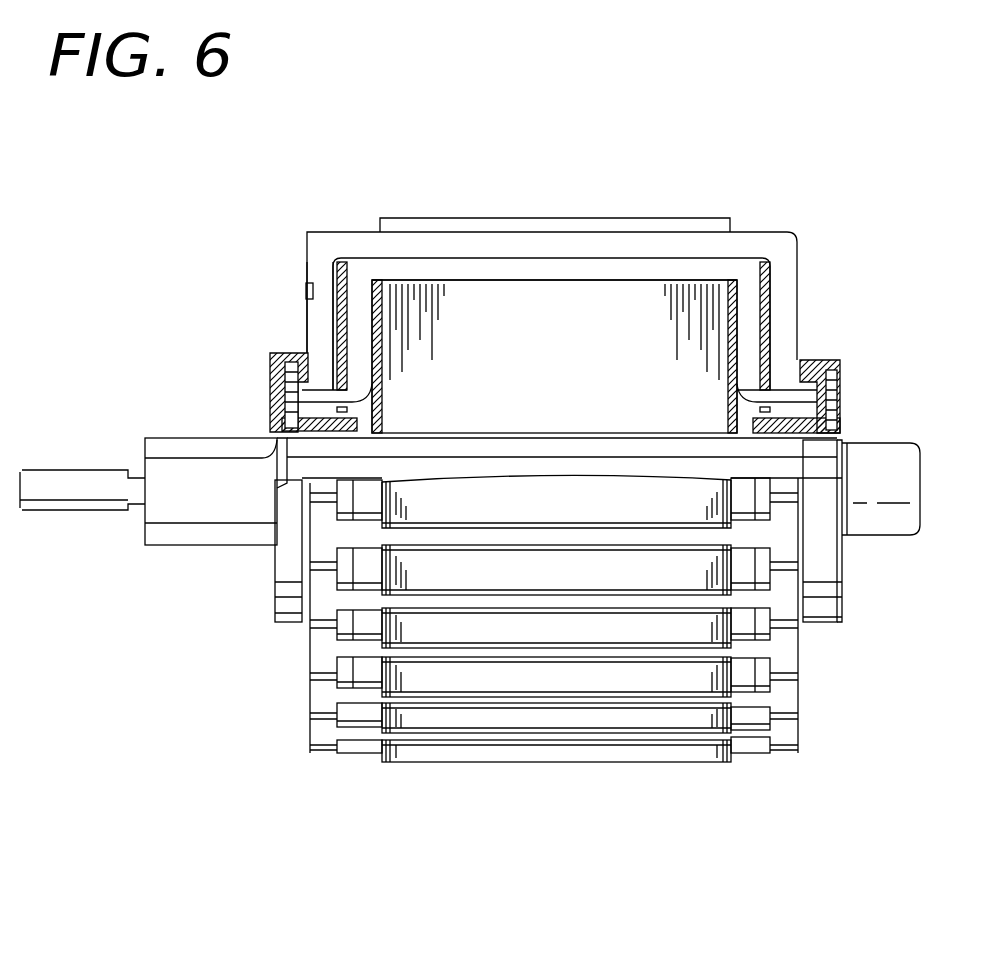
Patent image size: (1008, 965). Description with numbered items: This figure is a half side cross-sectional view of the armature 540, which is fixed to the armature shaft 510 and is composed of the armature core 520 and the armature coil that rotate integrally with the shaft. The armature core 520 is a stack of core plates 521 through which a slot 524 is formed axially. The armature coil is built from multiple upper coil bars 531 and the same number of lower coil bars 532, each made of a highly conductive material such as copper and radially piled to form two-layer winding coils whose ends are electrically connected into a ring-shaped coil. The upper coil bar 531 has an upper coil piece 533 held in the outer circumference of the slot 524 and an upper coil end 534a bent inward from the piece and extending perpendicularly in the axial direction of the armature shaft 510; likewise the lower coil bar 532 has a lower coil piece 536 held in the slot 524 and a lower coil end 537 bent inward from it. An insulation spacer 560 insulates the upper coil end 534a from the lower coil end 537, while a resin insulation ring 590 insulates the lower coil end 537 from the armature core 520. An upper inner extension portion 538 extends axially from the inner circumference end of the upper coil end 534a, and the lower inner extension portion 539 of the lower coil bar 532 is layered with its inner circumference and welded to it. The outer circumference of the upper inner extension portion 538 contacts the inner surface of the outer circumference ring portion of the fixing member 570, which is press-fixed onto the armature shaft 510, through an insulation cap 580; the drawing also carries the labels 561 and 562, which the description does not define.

The armature shaft 510 is at (207, 493).
The armature core 520 is at (735, 757).
The core plates 521 is at (735, 258).
The slot 524 is at (532, 280).
The upper coil bar 531 is at (412, 232).
The lower coil bar 532 is at (462, 250).
The upper coil piece 533 is at (583, 250).
The upper coil end 534a is at (307, 262).
The lower coil piece 536 is at (623, 272).
The lower coil end 537 is at (368, 343).
The upper inner extension portion 538 is at (270, 364).
The lower inner extension portion 539 is at (272, 398).
The armature 540 is at (770, 176).
The insulation spacer 560 is at (333, 285).
The stator plate 561 is at (350, 262).
The rotor hub 562 is at (327, 398).
The fixing member 570 is at (813, 356).
The insulation cap 580 is at (840, 380).
The insulation ring 590 is at (360, 395).